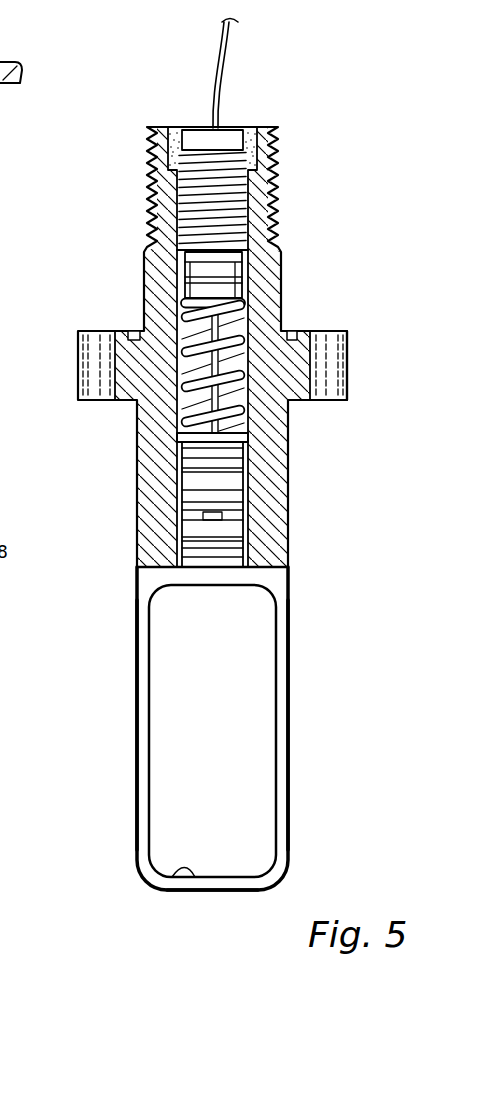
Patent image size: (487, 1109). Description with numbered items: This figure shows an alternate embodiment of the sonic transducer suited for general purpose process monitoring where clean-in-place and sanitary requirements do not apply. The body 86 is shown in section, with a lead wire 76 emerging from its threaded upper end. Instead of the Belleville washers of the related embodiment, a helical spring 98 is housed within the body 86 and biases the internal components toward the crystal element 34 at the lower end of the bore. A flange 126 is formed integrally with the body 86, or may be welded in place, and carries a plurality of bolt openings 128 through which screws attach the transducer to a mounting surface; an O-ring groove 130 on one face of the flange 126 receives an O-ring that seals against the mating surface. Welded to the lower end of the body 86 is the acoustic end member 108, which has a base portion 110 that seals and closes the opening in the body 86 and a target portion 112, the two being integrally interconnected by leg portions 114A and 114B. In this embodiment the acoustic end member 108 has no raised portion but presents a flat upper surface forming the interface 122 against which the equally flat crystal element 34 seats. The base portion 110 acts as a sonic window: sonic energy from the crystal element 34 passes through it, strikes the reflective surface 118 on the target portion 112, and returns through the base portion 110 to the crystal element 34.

The lead wire 76 is at (229, 60).
The body 86 is at (280, 483).
The helical spring 98 is at (183, 393).
The bolt openings 128 is at (106, 340).
The O-ring groove 130 is at (293, 332).
The flange 126 is at (293, 400).
The crystal element 34 is at (233, 558).
The interface 122 is at (138, 567).
The acoustic end member 108 is at (110, 725).
The base portion 110 is at (227, 587).
The leg portion 114A is at (143, 793).
The leg portion 114B is at (283, 710).
The target portion 112 is at (237, 893).
The reflective surface 118 is at (173, 875).